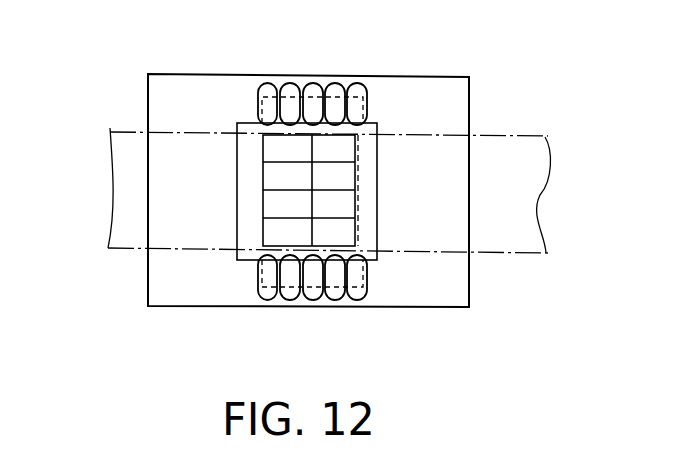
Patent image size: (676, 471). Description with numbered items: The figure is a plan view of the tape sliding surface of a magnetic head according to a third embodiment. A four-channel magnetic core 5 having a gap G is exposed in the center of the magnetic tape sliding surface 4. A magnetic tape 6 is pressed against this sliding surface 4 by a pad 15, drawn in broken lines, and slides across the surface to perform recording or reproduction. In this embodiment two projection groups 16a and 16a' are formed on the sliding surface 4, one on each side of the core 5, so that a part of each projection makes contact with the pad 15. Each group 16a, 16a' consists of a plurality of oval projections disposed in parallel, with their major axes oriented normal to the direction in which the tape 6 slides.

The magnetic tape sliding surface 4 is at (457, 90).
The magnetic core 5 is at (273, 147).
The magnetic tape 6 is at (121, 241).
The pad 15 is at (358, 153).
The projection group 16a is at (312, 304).
The projection group 16a' is at (312, 72).
The gap G is at (312, 206).